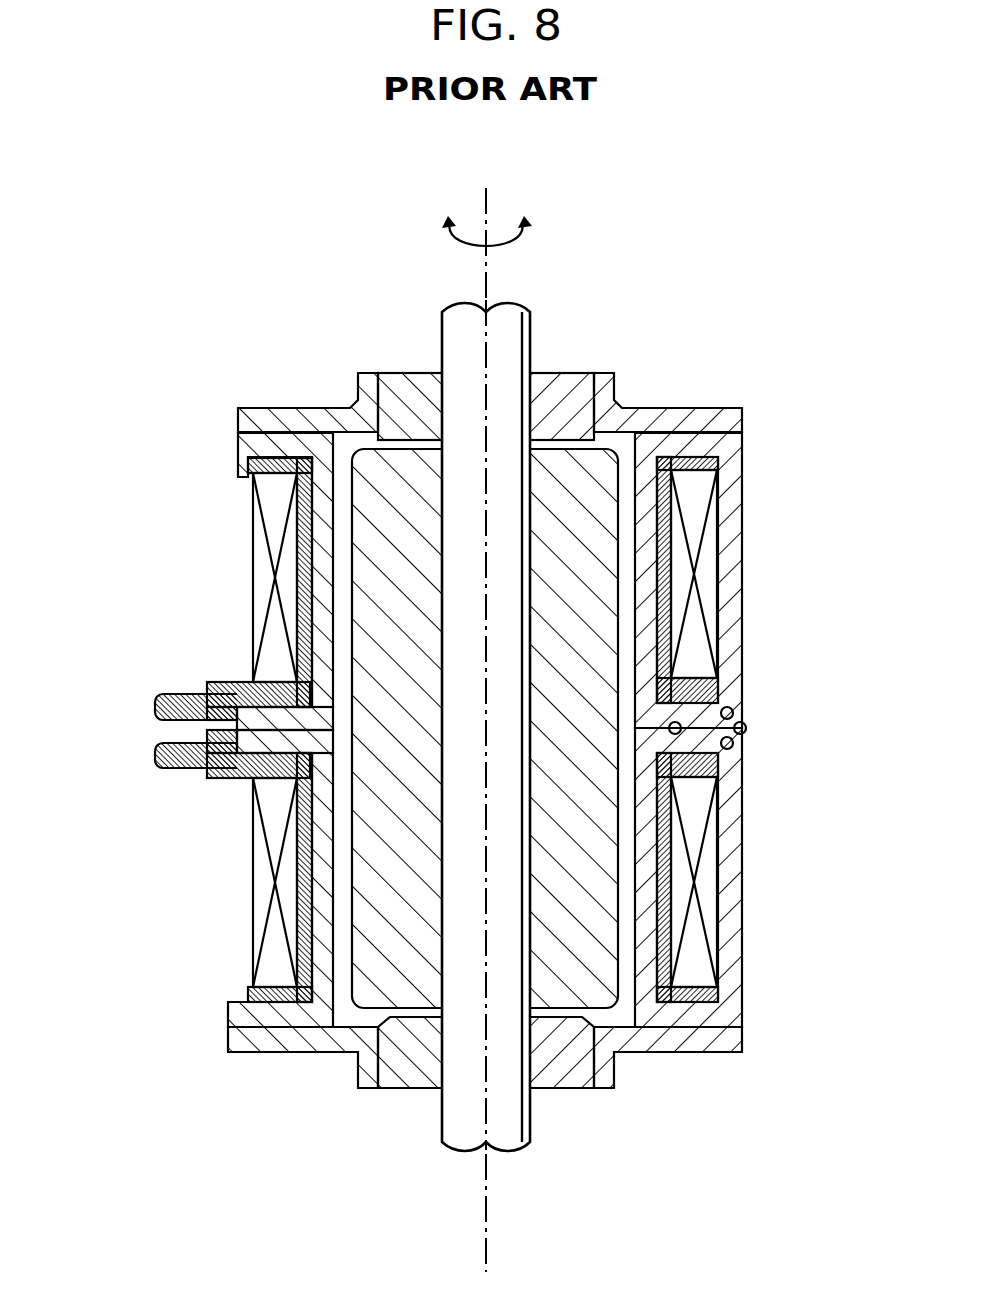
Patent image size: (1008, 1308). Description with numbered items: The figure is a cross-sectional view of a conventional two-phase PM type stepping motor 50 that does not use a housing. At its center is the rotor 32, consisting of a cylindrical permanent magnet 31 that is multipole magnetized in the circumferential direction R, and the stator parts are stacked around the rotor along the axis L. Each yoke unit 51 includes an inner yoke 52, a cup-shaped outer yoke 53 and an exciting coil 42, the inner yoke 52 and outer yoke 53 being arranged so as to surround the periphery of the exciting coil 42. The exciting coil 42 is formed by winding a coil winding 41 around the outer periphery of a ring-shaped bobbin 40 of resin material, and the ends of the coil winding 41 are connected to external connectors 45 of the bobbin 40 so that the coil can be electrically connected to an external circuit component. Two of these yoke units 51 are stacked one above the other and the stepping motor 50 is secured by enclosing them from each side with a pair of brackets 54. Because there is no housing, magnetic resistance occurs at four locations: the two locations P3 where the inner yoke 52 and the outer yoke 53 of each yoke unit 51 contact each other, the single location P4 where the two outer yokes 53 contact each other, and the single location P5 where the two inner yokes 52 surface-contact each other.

The stepping motor 50 is at (800, 283).
The permanent magnet 31 is at (578, 470).
The rotor 32 is at (432, 346).
The bracket 54 is at (663, 420).
The outer yoke 53 is at (230, 447).
The inner yoke 52 is at (300, 522).
The yoke unit 51 is at (92, 473).
The exciting coil 42 is at (245, 567).
The coil winding 41 is at (255, 600).
The bobbin 40 is at (216, 682).
The external connector 45 is at (158, 707).
The contact location between inner yoke and outer yoke P3 is at (734, 713).
The contact location between outer yokes P4 is at (747, 728).
The contact location between inner yokes P5 is at (740, 690).
The axis L is at (488, 200).
The circumferential direction R is at (524, 230).